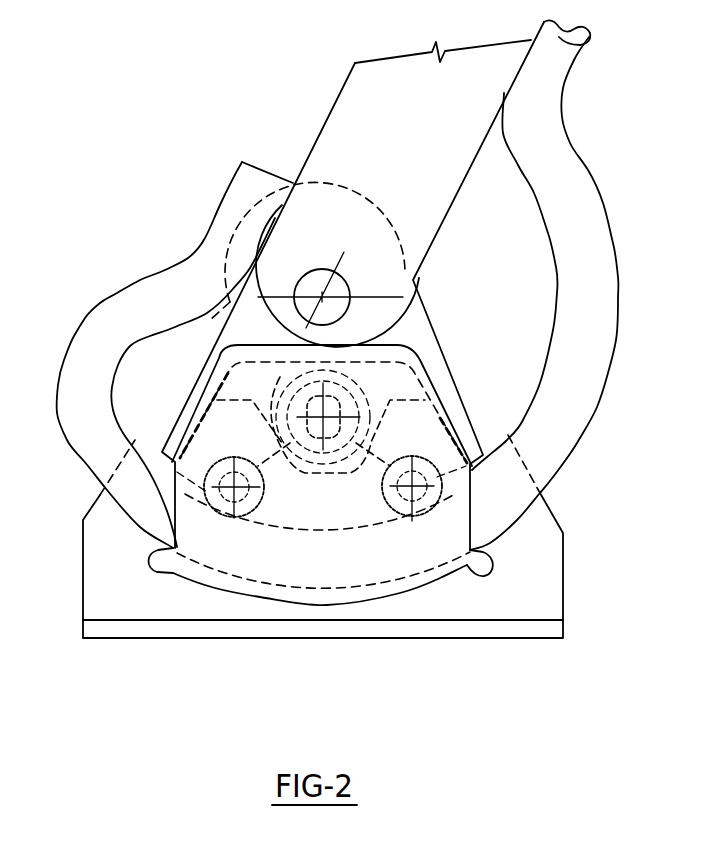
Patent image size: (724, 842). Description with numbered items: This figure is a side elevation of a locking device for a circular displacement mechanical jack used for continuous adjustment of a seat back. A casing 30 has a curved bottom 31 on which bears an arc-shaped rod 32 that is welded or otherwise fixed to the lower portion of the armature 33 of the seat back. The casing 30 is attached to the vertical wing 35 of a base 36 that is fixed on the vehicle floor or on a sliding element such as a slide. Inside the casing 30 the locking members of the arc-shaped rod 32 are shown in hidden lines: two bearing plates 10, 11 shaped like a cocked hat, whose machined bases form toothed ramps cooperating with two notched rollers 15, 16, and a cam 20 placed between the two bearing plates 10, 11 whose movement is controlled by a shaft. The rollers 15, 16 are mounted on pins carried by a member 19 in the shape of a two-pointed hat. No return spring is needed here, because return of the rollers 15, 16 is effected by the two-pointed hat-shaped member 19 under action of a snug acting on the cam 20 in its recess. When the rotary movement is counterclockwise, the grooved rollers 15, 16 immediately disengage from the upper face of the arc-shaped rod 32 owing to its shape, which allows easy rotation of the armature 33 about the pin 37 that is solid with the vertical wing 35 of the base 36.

The bearing plate 10 is at (210, 445).
The bearing plate 11 is at (435, 443).
The notched roller 15 is at (240, 505).
The notched roller 16 is at (402, 507).
The two-pointed hat-shaped member 19 is at (272, 401).
The cam 20 is at (363, 383).
The casing 30 is at (420, 383).
The curved bottom 31 is at (367, 593).
The arc-shaped rod 32 is at (117, 297).
The armature 33 is at (335, 123).
The vertical wing 35 is at (548, 540).
The base 36 is at (533, 632).
The pin 37 is at (317, 278).